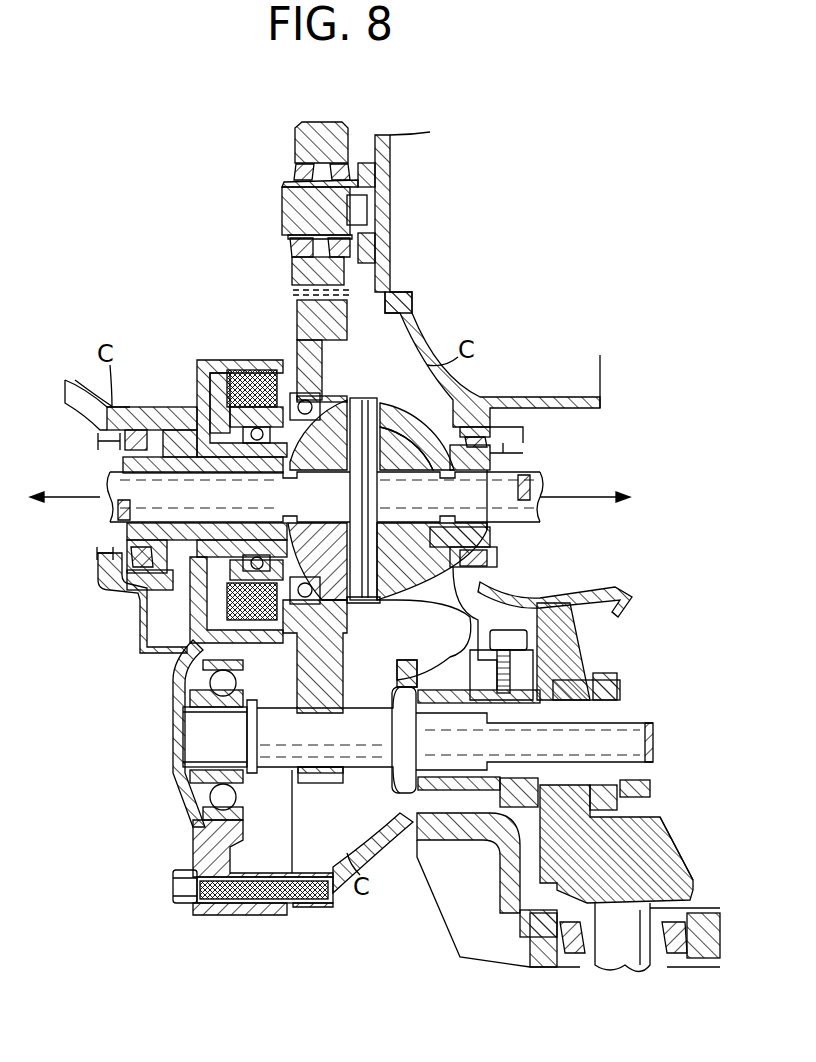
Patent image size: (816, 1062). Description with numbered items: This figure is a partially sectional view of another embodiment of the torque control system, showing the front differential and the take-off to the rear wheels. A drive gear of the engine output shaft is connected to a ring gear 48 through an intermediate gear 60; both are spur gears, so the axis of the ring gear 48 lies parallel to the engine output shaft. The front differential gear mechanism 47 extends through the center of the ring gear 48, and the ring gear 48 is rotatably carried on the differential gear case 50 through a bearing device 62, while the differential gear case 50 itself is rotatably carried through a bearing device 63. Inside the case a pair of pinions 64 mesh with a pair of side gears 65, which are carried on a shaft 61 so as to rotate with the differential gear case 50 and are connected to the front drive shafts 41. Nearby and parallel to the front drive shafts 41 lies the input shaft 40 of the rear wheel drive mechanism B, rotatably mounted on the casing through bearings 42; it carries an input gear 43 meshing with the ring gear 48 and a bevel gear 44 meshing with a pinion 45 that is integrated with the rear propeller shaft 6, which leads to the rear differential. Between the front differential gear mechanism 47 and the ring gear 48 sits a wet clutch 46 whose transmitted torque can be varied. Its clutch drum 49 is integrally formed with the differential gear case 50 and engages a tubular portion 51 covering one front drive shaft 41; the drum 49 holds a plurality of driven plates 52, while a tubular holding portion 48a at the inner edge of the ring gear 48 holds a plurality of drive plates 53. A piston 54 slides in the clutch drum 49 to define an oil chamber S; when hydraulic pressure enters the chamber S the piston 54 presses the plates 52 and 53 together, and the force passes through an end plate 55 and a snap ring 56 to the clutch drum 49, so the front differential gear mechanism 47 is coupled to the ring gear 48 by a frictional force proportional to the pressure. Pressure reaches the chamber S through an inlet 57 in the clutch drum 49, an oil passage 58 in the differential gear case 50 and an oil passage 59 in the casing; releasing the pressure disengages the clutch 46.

The rear propeller shaft 6 is at (637, 965).
The input shaft 40 is at (367, 750).
The front drive shafts 41 is at (130, 480).
The bearings 42 is at (207, 793).
The input gear 43 is at (320, 783).
The bevel gear 44 is at (577, 645).
The pinion 45 is at (663, 827).
The wet clutch 46 is at (185, 345).
The front differential gear mechanism 47 is at (405, 600).
The ring gear 48 is at (300, 325).
The tubular holding portion 48a is at (331, 371).
The clutch drum 49 is at (200, 378).
The differential gear case 50 is at (418, 420).
The tubular portion 51 is at (137, 533).
The driven plates 52 is at (252, 368).
The drive plates 53 is at (252, 625).
The piston 54 is at (212, 603).
The end plate 55 is at (246, 402).
The snap ring 56 is at (279, 400).
The inlet 57 is at (177, 595).
The oil passage 58 is at (190, 540).
The oil passage 59 is at (140, 600).
The intermediate gear 60 is at (295, 150).
The shaft 61 is at (363, 400).
The bearing device 62 is at (260, 473).
The bearing device 63 is at (127, 567).
The pinions 64 is at (380, 603).
The side gears 65 is at (337, 603).
The oil chamber S is at (197, 462).
The rear wheel drive mechanism B is at (685, 845).